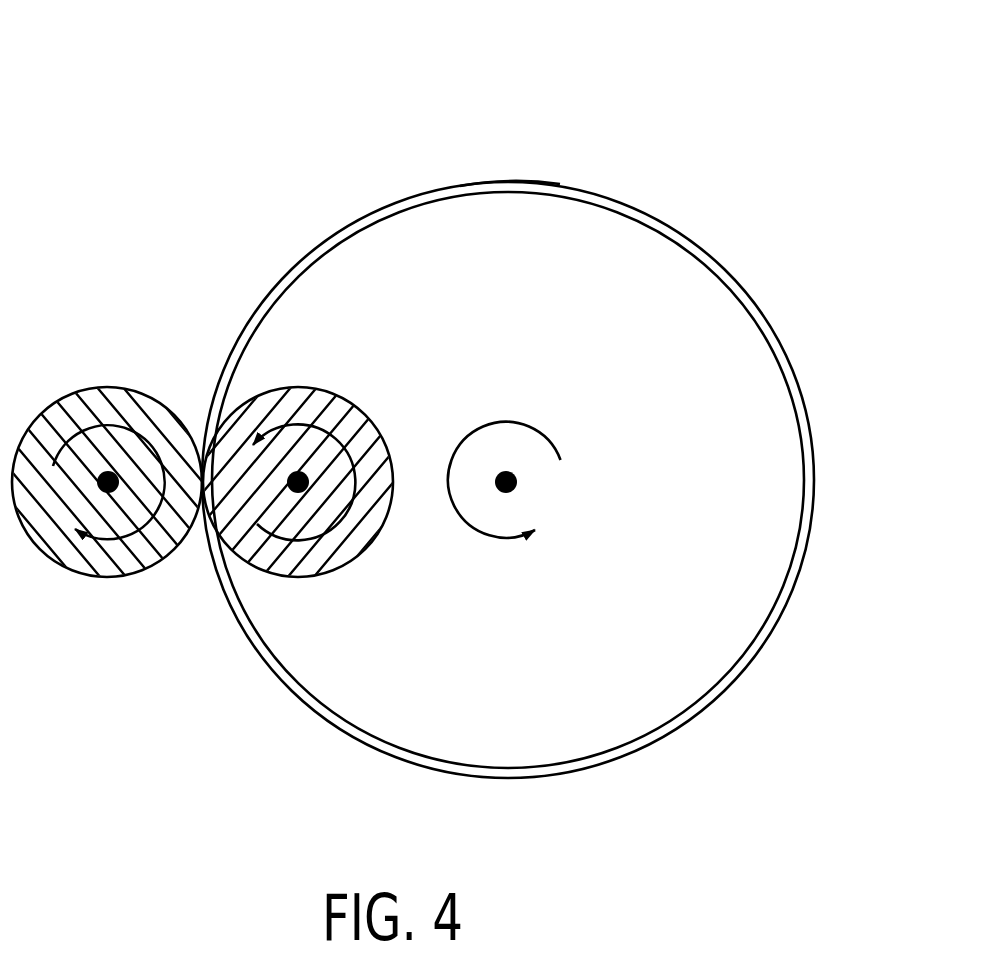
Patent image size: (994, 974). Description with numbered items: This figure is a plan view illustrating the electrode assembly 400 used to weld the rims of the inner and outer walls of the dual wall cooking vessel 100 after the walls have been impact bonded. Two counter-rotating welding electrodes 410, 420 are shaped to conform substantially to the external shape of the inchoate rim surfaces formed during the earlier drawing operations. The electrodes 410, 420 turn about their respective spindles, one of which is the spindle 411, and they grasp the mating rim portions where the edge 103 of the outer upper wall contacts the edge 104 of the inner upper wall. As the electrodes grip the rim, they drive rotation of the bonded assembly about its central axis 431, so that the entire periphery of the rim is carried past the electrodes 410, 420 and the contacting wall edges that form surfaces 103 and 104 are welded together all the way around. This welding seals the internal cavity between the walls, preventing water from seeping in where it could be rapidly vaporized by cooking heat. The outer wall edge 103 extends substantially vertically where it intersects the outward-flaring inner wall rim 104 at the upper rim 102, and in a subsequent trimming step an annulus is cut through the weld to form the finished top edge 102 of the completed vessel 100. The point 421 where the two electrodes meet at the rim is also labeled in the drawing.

The welding electrode assembly 400 is at (143, 97).
The dual wall cooking vessel 100 is at (803, 133).
The upper rim 102 is at (343, 737).
The edge of the outer upper wall 103 is at (563, 183).
The edge of the inner upper wall 104 is at (365, 728).
The welding electrode 410 is at (188, 492).
The spindle 411 is at (104, 474).
The welding electrode 420 is at (350, 405).
The nip 421 is at (291, 494).
The central axis 431 is at (533, 487).